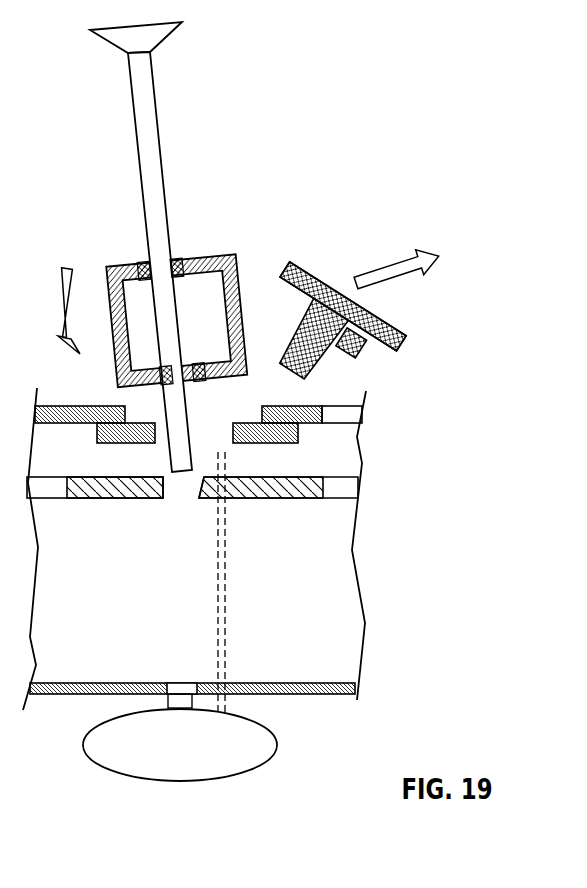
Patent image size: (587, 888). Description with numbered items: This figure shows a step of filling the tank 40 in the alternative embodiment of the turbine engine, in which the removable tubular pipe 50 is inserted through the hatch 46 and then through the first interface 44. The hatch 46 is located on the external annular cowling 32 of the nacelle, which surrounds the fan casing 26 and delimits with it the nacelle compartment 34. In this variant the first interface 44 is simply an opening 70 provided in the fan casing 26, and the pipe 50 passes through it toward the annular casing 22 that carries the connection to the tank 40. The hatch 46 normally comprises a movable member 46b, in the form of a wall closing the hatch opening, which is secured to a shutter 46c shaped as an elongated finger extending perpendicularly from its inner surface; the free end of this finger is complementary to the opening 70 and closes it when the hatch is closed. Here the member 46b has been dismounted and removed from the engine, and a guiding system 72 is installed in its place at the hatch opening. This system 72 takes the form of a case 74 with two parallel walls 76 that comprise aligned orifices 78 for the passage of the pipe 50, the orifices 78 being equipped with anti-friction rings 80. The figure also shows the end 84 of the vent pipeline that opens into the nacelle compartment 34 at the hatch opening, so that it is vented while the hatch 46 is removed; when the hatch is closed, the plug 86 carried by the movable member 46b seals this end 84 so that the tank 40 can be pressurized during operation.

The annular casing 22 is at (340, 683).
The fan casing 26 is at (309, 504).
The external annular cowling 32 is at (318, 426).
The nacelle compartment 34 is at (194, 549).
The tank 40 is at (255, 753).
The first interface 44 is at (163, 530).
The opening 70 is at (165, 484).
The hatch 46 is at (374, 324).
The movable member 46b is at (383, 316).
The shutter 46c is at (312, 340).
The pipe 50 is at (163, 168).
The guiding system 72 is at (193, 247).
The case 74 is at (240, 266).
The parallel walls 76 is at (209, 364).
The orifices 78 is at (150, 263).
The anti-friction rings 80 is at (174, 259).
The end of the pipeline 84 is at (220, 451).
The plug 86 is at (366, 343).